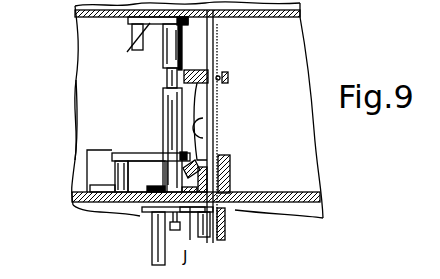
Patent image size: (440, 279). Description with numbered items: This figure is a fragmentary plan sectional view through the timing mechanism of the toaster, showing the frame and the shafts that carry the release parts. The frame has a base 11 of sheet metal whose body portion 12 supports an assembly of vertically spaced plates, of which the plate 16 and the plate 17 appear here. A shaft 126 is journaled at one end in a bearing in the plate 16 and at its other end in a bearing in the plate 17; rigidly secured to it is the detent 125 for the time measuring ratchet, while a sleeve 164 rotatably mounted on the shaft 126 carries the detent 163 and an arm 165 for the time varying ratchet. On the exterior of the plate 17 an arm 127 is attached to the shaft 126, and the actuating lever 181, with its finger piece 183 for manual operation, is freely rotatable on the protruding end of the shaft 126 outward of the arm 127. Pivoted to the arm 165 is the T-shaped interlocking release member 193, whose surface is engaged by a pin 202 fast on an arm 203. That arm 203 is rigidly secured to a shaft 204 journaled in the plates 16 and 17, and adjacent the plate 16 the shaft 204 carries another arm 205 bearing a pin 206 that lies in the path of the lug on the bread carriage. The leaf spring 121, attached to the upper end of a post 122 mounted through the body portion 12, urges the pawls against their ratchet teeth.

The base 11 is at (88, 71).
The body portion 12 is at (88, 116).
The plate 16 is at (300, 20).
The plate 17 is at (305, 195).
The leaf spring 121 is at (200, 100).
The post 122 is at (200, 128).
The detent 125 is at (192, 72).
The shaft 126 is at (213, 40).
The arm 127 is at (233, 207).
The detent 163 is at (165, 140).
The sleeve 164 is at (226, 177).
The arm 165 is at (200, 190).
The actuating lever 181 is at (150, 210).
The finger piece 183 is at (152, 257).
The interlocking release member 193 is at (113, 190).
The pin 202 is at (118, 162).
The arm 203 is at (140, 154).
The shaft 204 is at (167, 56).
The arm 205 is at (140, 49).
The pin 206 is at (130, 39).